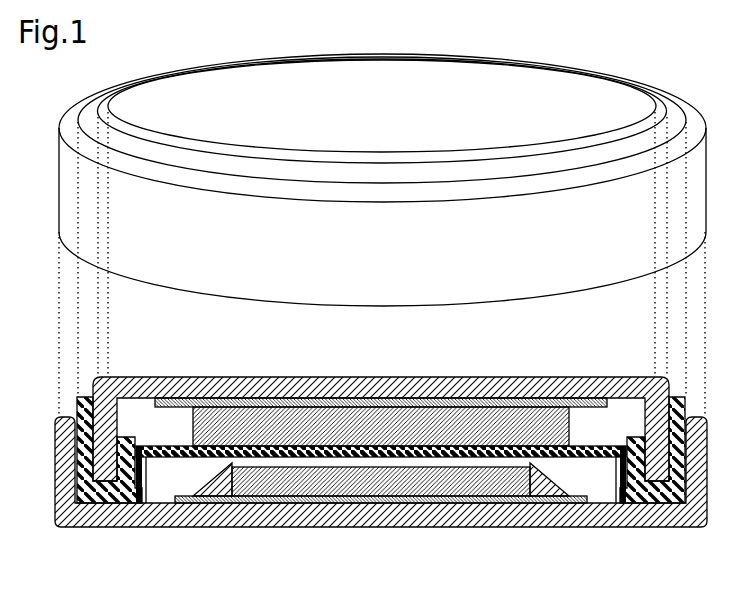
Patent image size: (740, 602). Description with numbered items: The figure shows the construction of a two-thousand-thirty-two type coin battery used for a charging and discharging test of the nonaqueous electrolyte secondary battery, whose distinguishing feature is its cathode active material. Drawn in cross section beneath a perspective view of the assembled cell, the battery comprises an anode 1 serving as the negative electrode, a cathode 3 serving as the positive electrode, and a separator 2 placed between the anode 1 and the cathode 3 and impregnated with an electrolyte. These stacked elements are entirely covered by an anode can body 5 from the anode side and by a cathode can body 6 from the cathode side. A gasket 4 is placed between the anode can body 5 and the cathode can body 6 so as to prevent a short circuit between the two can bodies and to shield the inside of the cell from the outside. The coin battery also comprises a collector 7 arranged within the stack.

The anode 1 is at (273, 428).
The separator 2 is at (624, 503).
The cathode 3 is at (365, 500).
The gasket 4 is at (90, 398).
The anode can body 5 is at (442, 387).
The cathode can body 6 is at (487, 513).
The collector 7 is at (206, 476).